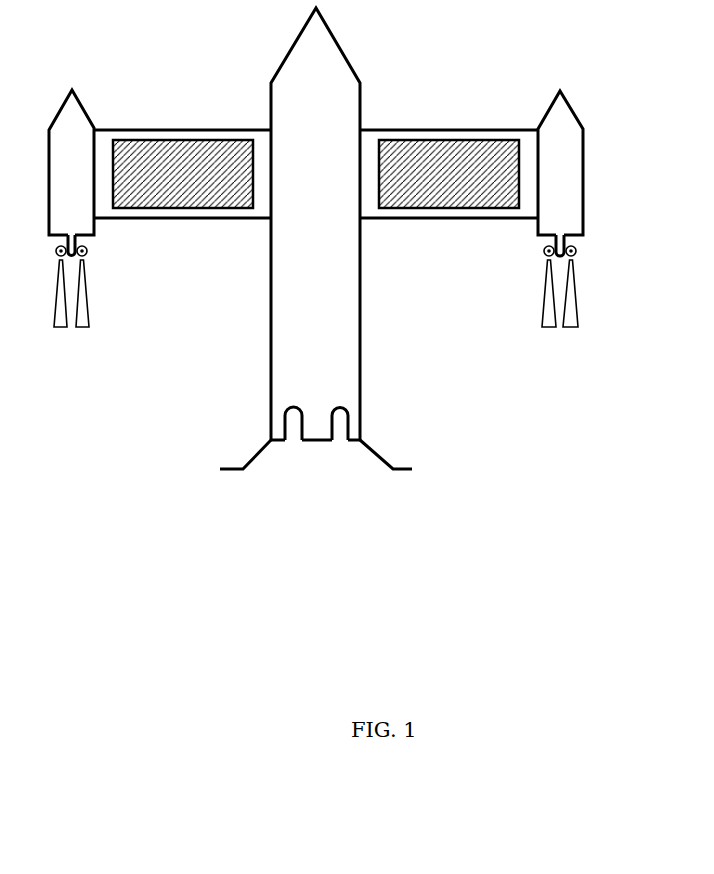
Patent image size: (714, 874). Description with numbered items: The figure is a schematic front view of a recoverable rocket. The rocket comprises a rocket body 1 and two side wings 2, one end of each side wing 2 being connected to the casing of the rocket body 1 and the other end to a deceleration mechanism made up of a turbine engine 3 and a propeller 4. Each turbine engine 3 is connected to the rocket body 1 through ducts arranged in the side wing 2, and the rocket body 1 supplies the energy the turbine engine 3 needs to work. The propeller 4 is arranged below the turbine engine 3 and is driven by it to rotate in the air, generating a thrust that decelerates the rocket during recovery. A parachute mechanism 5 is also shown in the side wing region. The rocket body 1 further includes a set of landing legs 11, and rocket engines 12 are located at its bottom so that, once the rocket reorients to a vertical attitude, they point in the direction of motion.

The rocket body 1 is at (315, 224).
The side wing 2 is at (316, 163).
The turbine engine 3 is at (568, 173).
The propeller 4 is at (560, 310).
The parachute mechanism 5 is at (440, 208).
The landing leg 11 is at (390, 455).
The rocket engine 12 is at (292, 442).